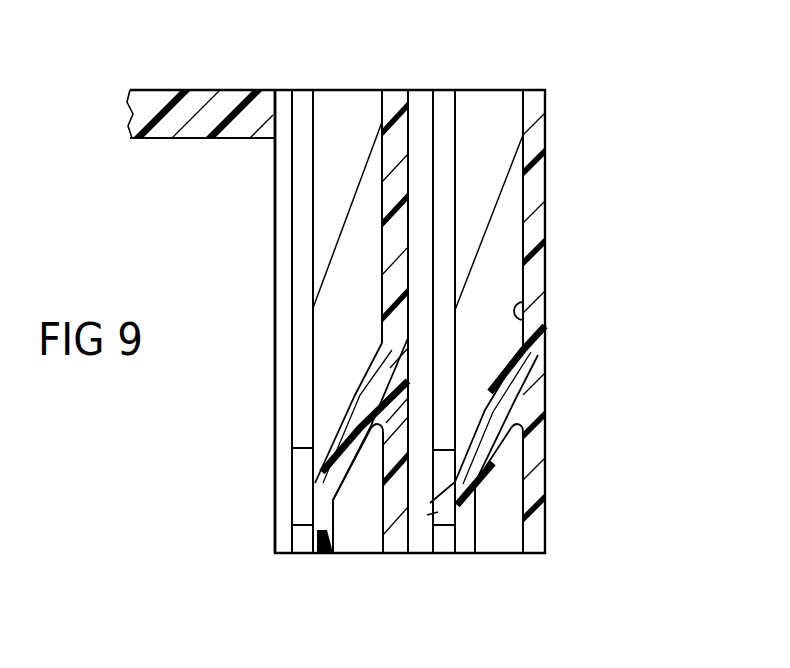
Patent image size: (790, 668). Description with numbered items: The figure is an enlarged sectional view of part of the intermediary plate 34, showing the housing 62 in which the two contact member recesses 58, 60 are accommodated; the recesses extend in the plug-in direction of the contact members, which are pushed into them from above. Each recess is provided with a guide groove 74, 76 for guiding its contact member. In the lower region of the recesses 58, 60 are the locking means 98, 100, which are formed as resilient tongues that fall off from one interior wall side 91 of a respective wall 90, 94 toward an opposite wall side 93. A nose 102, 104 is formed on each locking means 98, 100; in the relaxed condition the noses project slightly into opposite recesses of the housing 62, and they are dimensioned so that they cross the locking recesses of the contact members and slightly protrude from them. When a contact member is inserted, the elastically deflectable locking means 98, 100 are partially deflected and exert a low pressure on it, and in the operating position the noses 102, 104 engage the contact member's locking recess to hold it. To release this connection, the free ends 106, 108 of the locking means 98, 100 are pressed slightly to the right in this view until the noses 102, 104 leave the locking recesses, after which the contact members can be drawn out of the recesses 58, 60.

The intermediary plate 34 is at (217, 97).
The contact member recess 58 is at (325, 112).
The contact member recess 60 is at (490, 113).
The housing 62 is at (592, 163).
The guide groove 74 is at (445, 224).
The guide groove 76 is at (300, 259).
The wall 90 is at (536, 266).
The interior wall side 91 is at (522, 323).
The opposite wall side 93 is at (408, 157).
The wall 94 is at (389, 108).
The locking means 98 is at (492, 443).
The locking means 100 is at (352, 430).
The nose 102 is at (300, 510).
The nose 104 is at (427, 505).
The free end 106 is at (316, 556).
The free end 108 is at (457, 535).